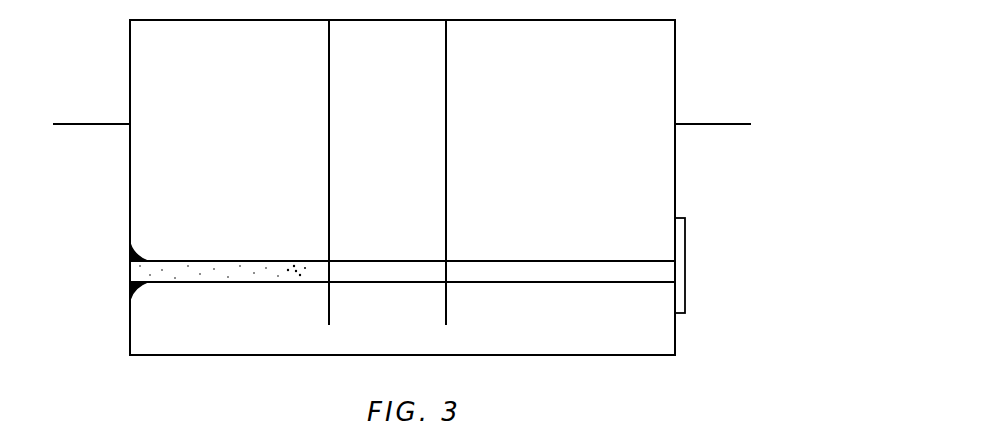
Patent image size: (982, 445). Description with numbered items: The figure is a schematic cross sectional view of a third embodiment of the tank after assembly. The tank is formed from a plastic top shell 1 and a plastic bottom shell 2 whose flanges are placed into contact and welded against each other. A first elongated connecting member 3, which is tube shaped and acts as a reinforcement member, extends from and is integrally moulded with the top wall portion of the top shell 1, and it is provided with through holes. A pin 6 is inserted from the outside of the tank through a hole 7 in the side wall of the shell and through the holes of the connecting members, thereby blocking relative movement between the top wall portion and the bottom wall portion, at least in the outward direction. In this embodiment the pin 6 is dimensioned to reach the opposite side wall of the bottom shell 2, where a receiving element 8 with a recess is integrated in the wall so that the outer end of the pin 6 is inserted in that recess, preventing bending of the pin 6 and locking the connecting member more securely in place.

The top shell 1 is at (130, 83).
The bottom shell 2 is at (128, 243).
The first elongated connecting member 3 is at (432, 126).
The pin 6 is at (676, 262).
The hole 7 is at (675, 290).
The receiving element 8 is at (129, 286).